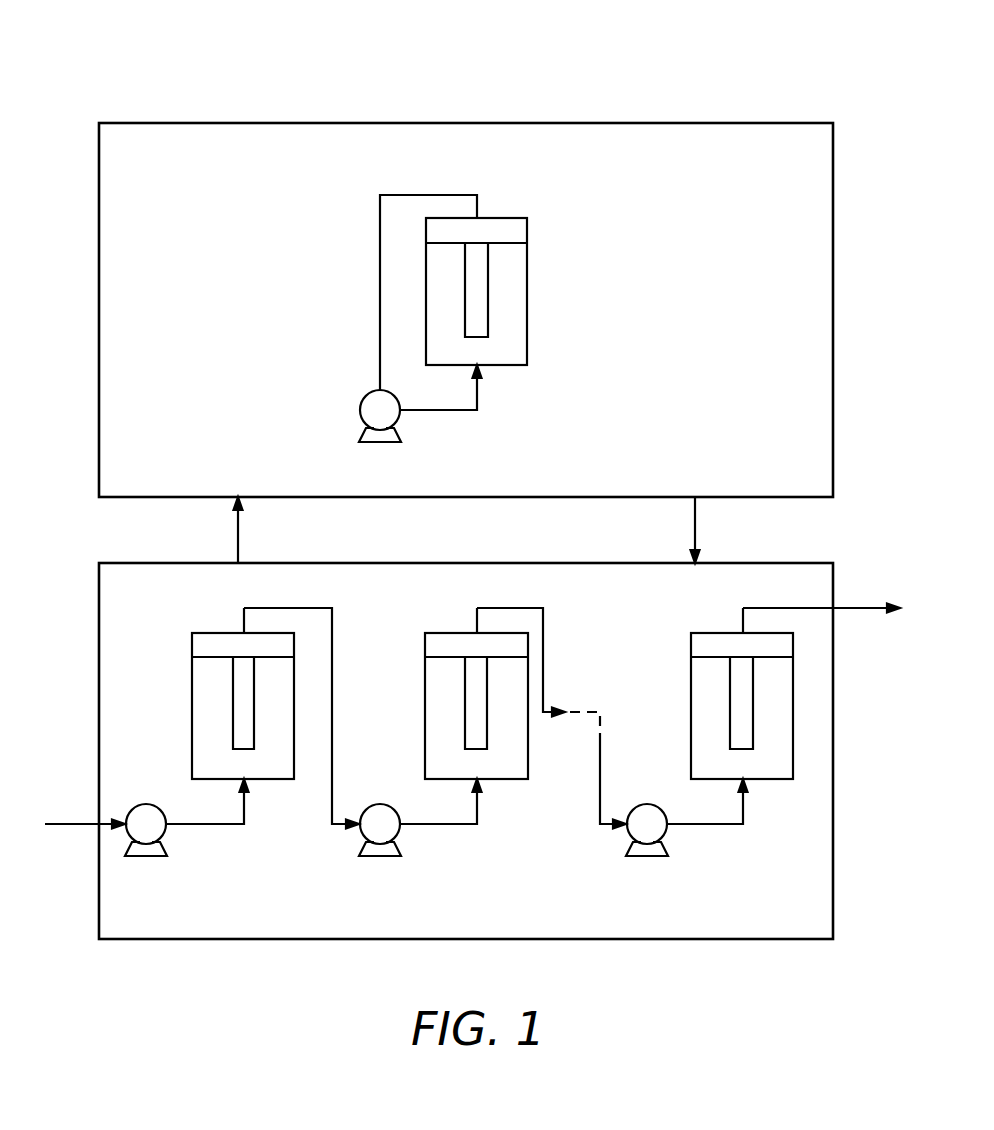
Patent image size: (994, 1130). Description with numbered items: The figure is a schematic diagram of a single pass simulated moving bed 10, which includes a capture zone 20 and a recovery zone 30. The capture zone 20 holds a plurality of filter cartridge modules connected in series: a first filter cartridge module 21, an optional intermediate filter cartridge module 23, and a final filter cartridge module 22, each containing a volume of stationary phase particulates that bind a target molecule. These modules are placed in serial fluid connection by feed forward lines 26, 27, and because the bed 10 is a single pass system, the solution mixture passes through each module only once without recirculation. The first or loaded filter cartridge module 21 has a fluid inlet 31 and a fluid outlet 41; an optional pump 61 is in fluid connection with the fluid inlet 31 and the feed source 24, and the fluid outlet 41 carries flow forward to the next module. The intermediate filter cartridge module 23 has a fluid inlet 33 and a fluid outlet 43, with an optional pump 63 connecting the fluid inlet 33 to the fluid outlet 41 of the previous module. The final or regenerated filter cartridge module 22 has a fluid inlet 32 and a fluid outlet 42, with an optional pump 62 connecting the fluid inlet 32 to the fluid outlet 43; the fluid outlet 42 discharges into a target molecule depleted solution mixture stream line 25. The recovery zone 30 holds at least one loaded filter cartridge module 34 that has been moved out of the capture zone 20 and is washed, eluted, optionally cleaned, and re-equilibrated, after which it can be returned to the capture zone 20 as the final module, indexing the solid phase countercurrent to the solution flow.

The single pass simulated moving bed 10 is at (795, 78).
The capture zone 20 is at (572, 927).
The first filter cartridge module 21 is at (209, 775).
The final filter cartridge module 22 is at (709, 775).
The intermediate filter cartridge module 23 is at (443, 775).
The feed source 24 is at (63, 822).
The target molecule depleted solution mixture stream line 25 is at (858, 608).
The feed forward line 26 is at (335, 625).
The feed forward line 27 is at (546, 625).
The recovery zone 30 is at (533, 471).
The fluid inlet 31 is at (246, 808).
The fluid inlet 32 is at (745, 808).
The fluid inlet 33 is at (479, 808).
The filter cartridge module 34 is at (556, 284).
The fluid outlet 41 is at (250, 618).
The fluid outlet 42 is at (746, 620).
The fluid outlet 43 is at (479, 620).
The pump 61 is at (147, 858).
The pump 62 is at (655, 858).
The pump 63 is at (381, 858).